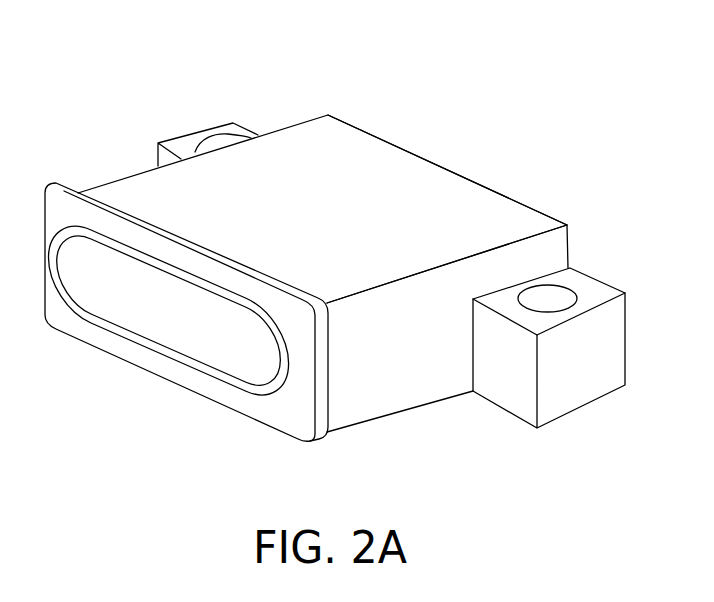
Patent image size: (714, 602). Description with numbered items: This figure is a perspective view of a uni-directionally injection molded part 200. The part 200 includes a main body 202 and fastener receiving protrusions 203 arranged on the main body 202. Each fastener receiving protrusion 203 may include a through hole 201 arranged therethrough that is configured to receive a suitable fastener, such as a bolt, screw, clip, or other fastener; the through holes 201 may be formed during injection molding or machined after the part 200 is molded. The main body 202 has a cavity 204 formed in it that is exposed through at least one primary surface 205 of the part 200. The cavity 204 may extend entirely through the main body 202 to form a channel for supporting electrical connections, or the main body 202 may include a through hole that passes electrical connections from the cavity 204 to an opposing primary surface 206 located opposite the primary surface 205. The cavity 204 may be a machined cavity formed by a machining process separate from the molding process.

The part 200 is at (573, 52).
The through hole 201 is at (562, 292).
The main body 202 is at (547, 226).
The fastener receiving protrusion 203 is at (625, 374).
The cavity 204 is at (186, 332).
The primary surface 205 is at (298, 429).
The opposing primary surface 206 is at (516, 174).